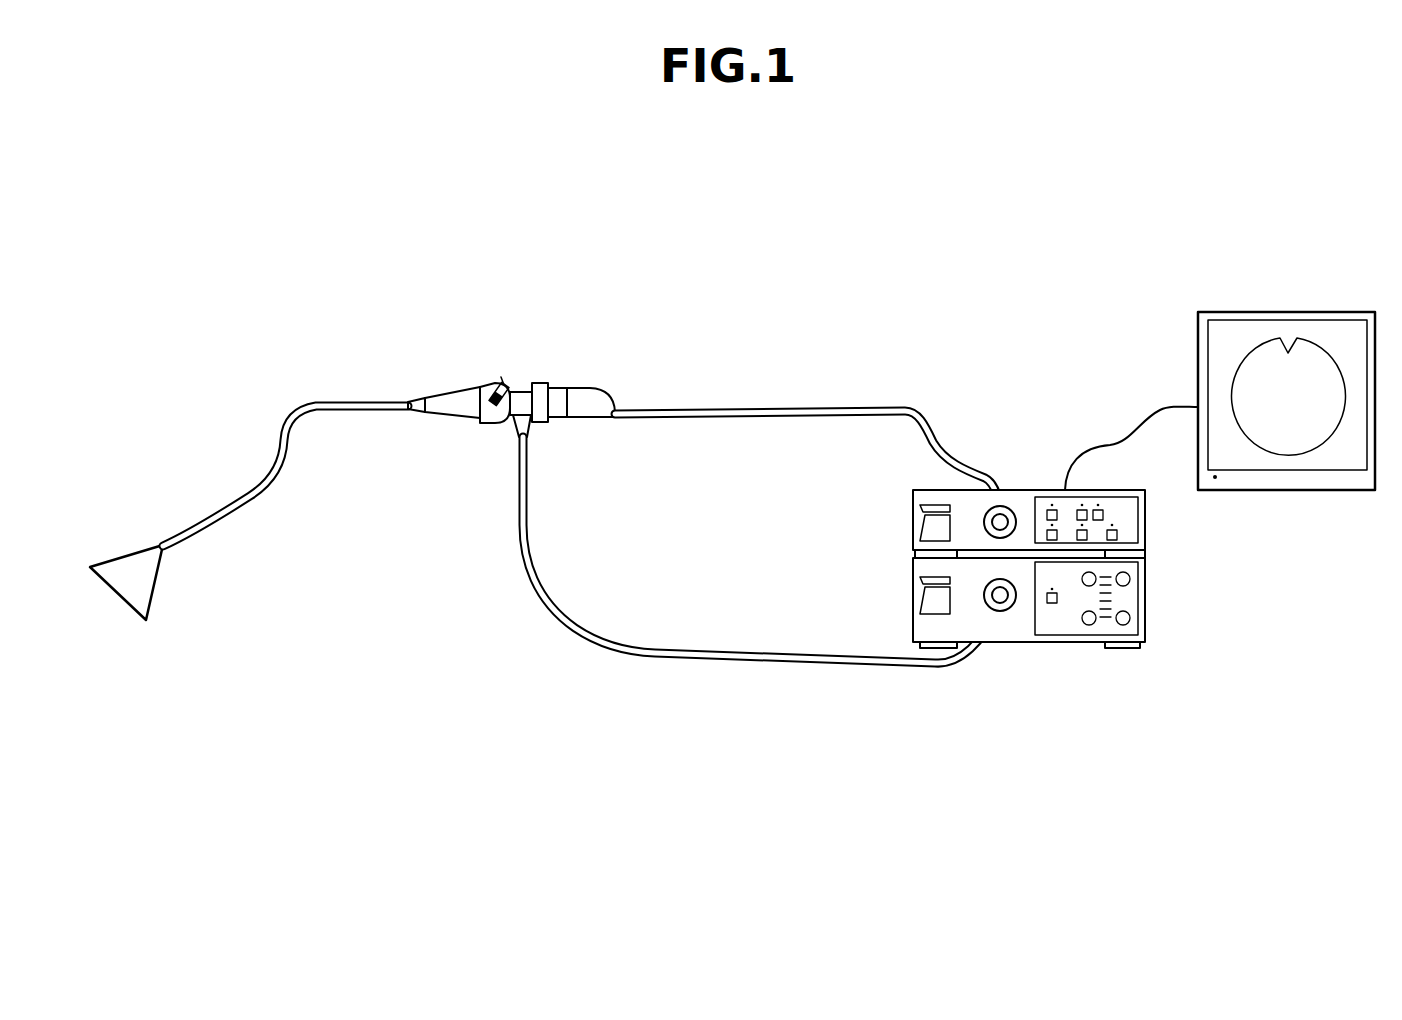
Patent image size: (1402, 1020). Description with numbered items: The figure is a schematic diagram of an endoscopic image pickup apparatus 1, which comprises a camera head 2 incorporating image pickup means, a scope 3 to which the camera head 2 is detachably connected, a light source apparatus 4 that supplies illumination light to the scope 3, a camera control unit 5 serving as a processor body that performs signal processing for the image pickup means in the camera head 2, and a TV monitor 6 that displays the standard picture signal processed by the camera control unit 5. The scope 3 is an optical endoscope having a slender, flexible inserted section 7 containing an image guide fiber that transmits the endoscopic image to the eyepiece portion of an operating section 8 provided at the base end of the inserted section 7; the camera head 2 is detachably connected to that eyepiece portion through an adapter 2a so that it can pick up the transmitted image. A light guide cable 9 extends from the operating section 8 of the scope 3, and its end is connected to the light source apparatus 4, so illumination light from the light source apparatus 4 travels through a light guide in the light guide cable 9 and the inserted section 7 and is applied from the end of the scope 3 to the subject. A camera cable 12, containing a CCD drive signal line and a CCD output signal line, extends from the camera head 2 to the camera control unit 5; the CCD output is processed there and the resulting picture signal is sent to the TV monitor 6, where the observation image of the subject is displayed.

The endoscopic image pickup apparatus 1 is at (744, 268).
The camera head 2 is at (600, 392).
The adapter 2a is at (543, 383).
The scope 3 is at (327, 364).
The light source apparatus 4 is at (1146, 596).
The camera control unit 5 is at (913, 520).
The TV monitor 6 is at (1287, 312).
The inserted section 7 is at (247, 500).
The operating section 8 is at (443, 421).
The light guide cable 9 is at (518, 523).
The camera cable 12 is at (732, 408).